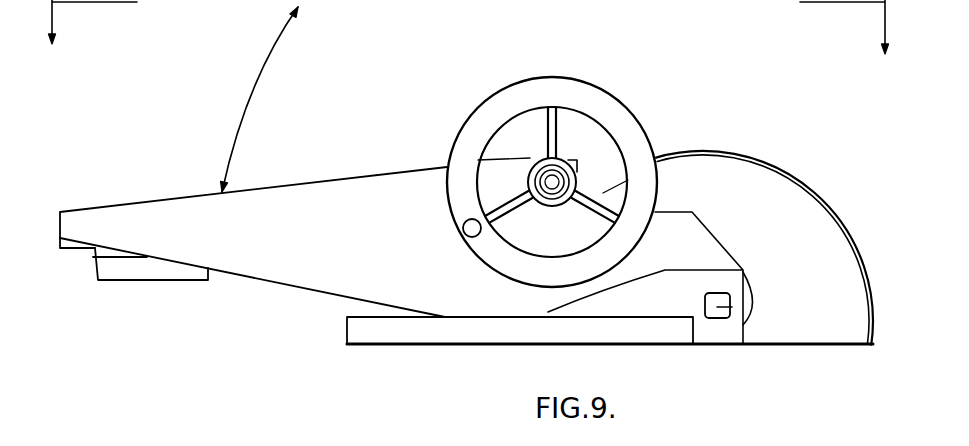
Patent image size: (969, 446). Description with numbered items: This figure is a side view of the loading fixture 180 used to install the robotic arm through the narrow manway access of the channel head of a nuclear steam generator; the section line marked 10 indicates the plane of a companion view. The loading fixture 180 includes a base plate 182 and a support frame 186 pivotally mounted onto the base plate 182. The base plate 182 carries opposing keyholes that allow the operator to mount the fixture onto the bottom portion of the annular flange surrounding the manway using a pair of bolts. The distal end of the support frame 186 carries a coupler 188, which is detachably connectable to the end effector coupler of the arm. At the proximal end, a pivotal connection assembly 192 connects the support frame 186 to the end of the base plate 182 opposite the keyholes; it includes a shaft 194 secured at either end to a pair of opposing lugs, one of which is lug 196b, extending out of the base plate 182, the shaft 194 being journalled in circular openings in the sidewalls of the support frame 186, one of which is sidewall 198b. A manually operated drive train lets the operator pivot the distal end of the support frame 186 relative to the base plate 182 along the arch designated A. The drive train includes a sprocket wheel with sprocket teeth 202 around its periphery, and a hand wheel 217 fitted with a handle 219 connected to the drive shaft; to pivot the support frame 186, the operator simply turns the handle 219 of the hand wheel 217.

The apparatus section line 10 is at (468, 42).
The arch A is at (255, 90).
The loading fixture 180 is at (173, 181).
The base plate 182 is at (434, 334).
The support frame 186 is at (283, 295).
The coupler 188 is at (142, 272).
The pivotal connection assembly 192 is at (727, 328).
The shaft 194 is at (755, 305).
The lug 196b is at (618, 298).
The sidewall 198b is at (328, 245).
The sprocket teeth 202 is at (802, 180).
The hand wheel 217 is at (632, 128).
The handle 219 is at (466, 234).